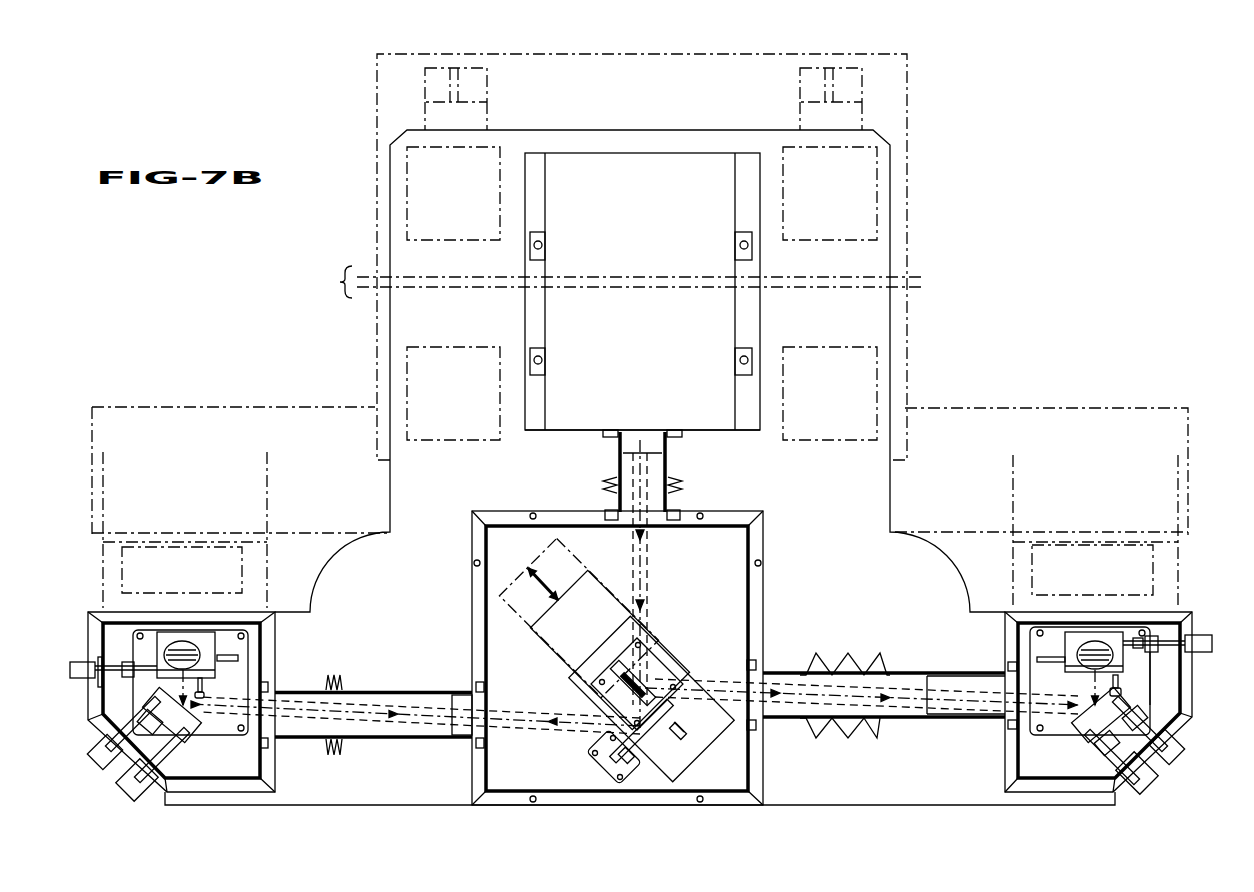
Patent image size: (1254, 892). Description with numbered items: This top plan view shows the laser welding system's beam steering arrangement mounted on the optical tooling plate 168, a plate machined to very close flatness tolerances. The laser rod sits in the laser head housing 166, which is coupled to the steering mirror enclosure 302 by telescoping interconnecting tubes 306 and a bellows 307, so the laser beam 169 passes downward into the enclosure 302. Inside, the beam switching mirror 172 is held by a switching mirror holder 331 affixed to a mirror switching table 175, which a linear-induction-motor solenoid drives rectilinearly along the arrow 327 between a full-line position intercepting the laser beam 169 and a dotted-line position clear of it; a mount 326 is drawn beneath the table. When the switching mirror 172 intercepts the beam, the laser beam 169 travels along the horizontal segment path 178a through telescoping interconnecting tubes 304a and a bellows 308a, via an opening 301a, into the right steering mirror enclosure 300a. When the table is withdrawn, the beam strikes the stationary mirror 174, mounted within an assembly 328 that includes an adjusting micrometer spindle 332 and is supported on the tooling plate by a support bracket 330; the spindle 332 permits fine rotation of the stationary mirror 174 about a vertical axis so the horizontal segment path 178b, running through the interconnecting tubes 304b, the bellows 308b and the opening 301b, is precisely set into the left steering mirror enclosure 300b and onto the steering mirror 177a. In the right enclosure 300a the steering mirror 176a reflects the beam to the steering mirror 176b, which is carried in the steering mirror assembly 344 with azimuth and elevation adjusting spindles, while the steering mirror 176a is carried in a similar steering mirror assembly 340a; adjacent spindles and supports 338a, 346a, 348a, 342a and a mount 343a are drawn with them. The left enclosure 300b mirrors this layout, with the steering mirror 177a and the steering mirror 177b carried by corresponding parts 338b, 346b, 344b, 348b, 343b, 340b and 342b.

The optical tooling plate 168 is at (890, 368).
The laser head housing 166 is at (587, 432).
The beam tube 306 is at (668, 450).
The bellows 307 is at (684, 486).
The steering mirror enclosure 302 is at (483, 618).
The laser beam 169 is at (646, 580).
The stationary mirror 174 is at (680, 766).
The mirror switching table 175 is at (605, 578).
The arrow 327 is at (548, 568).
The mirror mount 326 is at (670, 653).
The switching mirror holder 331 is at (613, 662).
The beam switching mirror 172 is at (613, 686).
The assembly 328 is at (667, 717).
The adjusting micrometer spindle 332 is at (681, 739).
The support bracket 330 is at (588, 755).
The horizontal segment path 178b is at (357, 716).
The interconnecting tubes 304b is at (453, 742).
The opening 301b is at (263, 720).
The bellows 308b is at (328, 752).
The horizontal segment path 178a is at (812, 690).
The telescoping interconnecting tubes 304a is at (892, 672).
The opening 301a is at (1013, 680).
The bellows 308a is at (822, 652).
The left steering mirror enclosure 300b is at (263, 632).
The mounting plate 338b is at (132, 645).
The adjustment knob 346b is at (77, 661).
The lens mount 344b is at (173, 638).
The steering mirror 177b is at (203, 642).
The pin 348b is at (203, 693).
The mirror mount 343b is at (170, 768).
The mirror 340b is at (160, 693).
The detector 342b is at (120, 718).
The steering mirror 177a is at (123, 760).
The right steering mirror enclosure 300a is at (1183, 697).
The mounting plate 338a is at (1142, 667).
The adjustment knob 346a is at (1133, 640).
The steering mirror assembly 344 is at (1078, 632).
The steering mirror 176b is at (1088, 642).
The pin 348a is at (1118, 686).
The mirror mount 343a is at (1100, 740).
The steering mirror assembly 340a is at (1075, 715).
The detector 342a is at (1185, 705).
The steering mirror 176a is at (1158, 768).